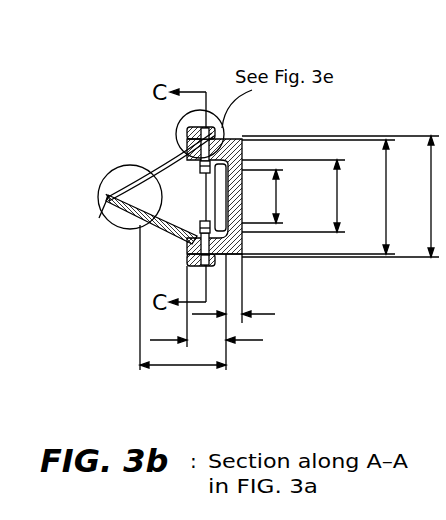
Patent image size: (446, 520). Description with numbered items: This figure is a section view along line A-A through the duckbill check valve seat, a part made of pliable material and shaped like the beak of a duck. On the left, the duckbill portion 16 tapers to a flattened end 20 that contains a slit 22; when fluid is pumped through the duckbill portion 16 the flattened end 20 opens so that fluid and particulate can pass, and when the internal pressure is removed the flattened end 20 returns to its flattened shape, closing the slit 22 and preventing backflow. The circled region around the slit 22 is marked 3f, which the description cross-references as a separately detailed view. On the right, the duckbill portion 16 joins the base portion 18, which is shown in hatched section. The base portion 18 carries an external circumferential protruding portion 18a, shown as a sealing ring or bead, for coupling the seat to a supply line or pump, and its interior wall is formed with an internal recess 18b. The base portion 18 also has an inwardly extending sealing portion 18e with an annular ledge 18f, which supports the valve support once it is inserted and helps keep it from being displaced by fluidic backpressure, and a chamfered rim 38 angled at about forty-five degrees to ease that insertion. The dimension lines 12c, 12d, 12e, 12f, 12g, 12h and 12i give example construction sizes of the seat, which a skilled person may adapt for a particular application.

The region of sheet 3f is at (99, 218).
The dimension 12c is at (183, 376).
The dimension 12d is at (248, 342).
The dimension 12e is at (265, 314).
The dimension 12f is at (293, 196).
The dimension 12g is at (343, 196).
The dimension 12h is at (389, 197).
The dimension 12i is at (430, 196).
The duckbill portion 16 is at (140, 215).
The base portion 18 is at (232, 254).
The external circumferential protruding portion 18a is at (187, 252).
The internal recess 18b is at (180, 143).
The inwardly extending sealing portion 18e is at (233, 262).
The annular ledge 18f is at (243, 228).
The flattened end 20 is at (110, 174).
The slit 22 is at (108, 197).
The chamfered rim 38 is at (273, 137).